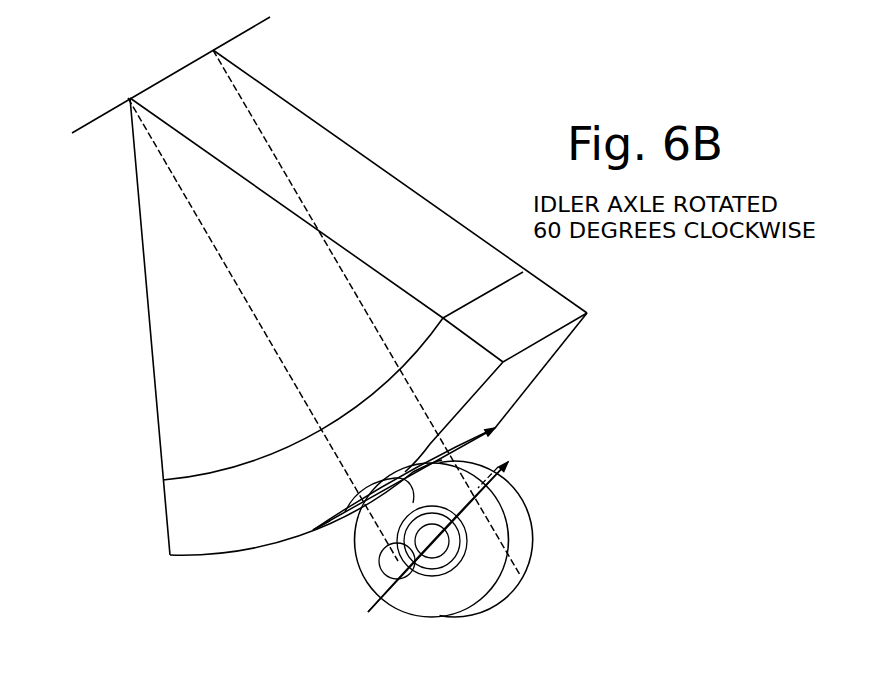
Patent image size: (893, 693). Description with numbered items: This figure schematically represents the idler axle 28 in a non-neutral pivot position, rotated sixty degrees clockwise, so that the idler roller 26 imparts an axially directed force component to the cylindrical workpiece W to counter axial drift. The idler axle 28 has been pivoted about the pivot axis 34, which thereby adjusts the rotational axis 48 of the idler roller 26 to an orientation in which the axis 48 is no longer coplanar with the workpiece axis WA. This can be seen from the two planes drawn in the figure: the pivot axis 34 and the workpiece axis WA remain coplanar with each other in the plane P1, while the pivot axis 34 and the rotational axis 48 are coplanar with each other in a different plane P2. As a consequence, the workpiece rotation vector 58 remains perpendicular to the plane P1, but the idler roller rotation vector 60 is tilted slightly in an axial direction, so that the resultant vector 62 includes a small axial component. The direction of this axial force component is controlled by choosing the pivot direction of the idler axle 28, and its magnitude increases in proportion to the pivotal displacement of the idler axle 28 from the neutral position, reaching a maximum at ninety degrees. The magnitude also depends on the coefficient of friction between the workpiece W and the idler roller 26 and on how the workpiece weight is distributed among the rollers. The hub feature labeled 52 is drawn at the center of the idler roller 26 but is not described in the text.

The workpiece axis WA is at (230, 42).
The workpiece W is at (543, 370).
The plane P1 is at (290, 182).
The plane P2 is at (498, 460).
The idler roller 26 is at (514, 482).
The idler axle 28 is at (377, 573).
The pivot axis 34 is at (396, 600).
The rotational axis of idler roller 48 is at (483, 541).
The hub 52 is at (448, 578).
The workpiece rotation vector 58 is at (353, 503).
The idler roller rotation vector 60 is at (448, 458).
The resultant vector 62 is at (357, 528).